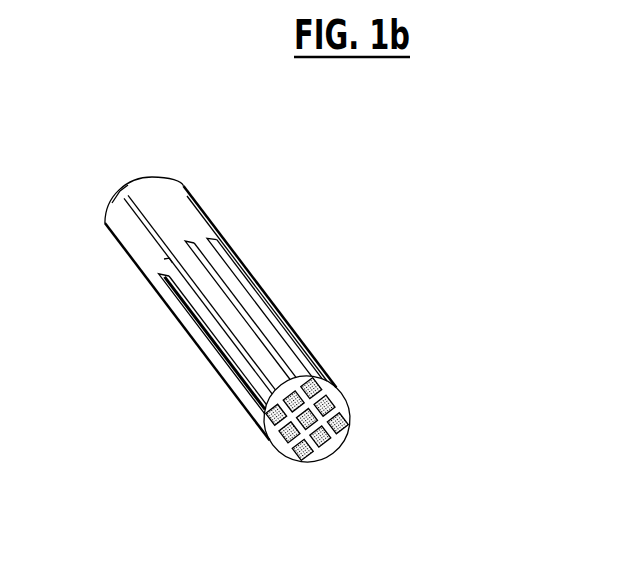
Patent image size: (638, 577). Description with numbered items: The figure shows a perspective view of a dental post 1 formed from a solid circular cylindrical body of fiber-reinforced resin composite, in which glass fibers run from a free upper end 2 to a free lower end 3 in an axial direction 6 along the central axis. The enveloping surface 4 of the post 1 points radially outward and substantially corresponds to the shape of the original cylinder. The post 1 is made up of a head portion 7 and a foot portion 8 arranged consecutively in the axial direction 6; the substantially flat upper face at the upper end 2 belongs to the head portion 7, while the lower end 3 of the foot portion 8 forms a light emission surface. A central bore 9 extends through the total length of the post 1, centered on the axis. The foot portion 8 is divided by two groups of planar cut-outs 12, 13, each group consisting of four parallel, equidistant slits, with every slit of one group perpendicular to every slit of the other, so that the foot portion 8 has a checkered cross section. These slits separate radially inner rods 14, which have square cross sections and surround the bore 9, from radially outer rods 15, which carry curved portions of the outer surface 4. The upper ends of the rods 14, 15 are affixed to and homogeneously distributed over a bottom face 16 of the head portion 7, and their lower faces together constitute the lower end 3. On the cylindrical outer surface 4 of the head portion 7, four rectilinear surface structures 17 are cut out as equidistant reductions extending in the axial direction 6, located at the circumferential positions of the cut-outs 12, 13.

The dental post 1 is at (164, 134).
The free upper end 2 is at (117, 191).
The free lower end 3 is at (338, 434).
The enveloping surface 4 is at (238, 293).
The axial direction 6 is at (45, 280).
The head portion 7 is at (253, 266).
The foot portion 8 is at (278, 347).
The central bore 9 is at (317, 433).
The planar cut-outs 12 is at (350, 403).
The planar cut-outs 13 is at (275, 458).
The radially inner rods 14 is at (276, 447).
The radially outer rods 15 is at (285, 384).
The bottom face 16 is at (205, 237).
The surface structures 17 is at (128, 212).